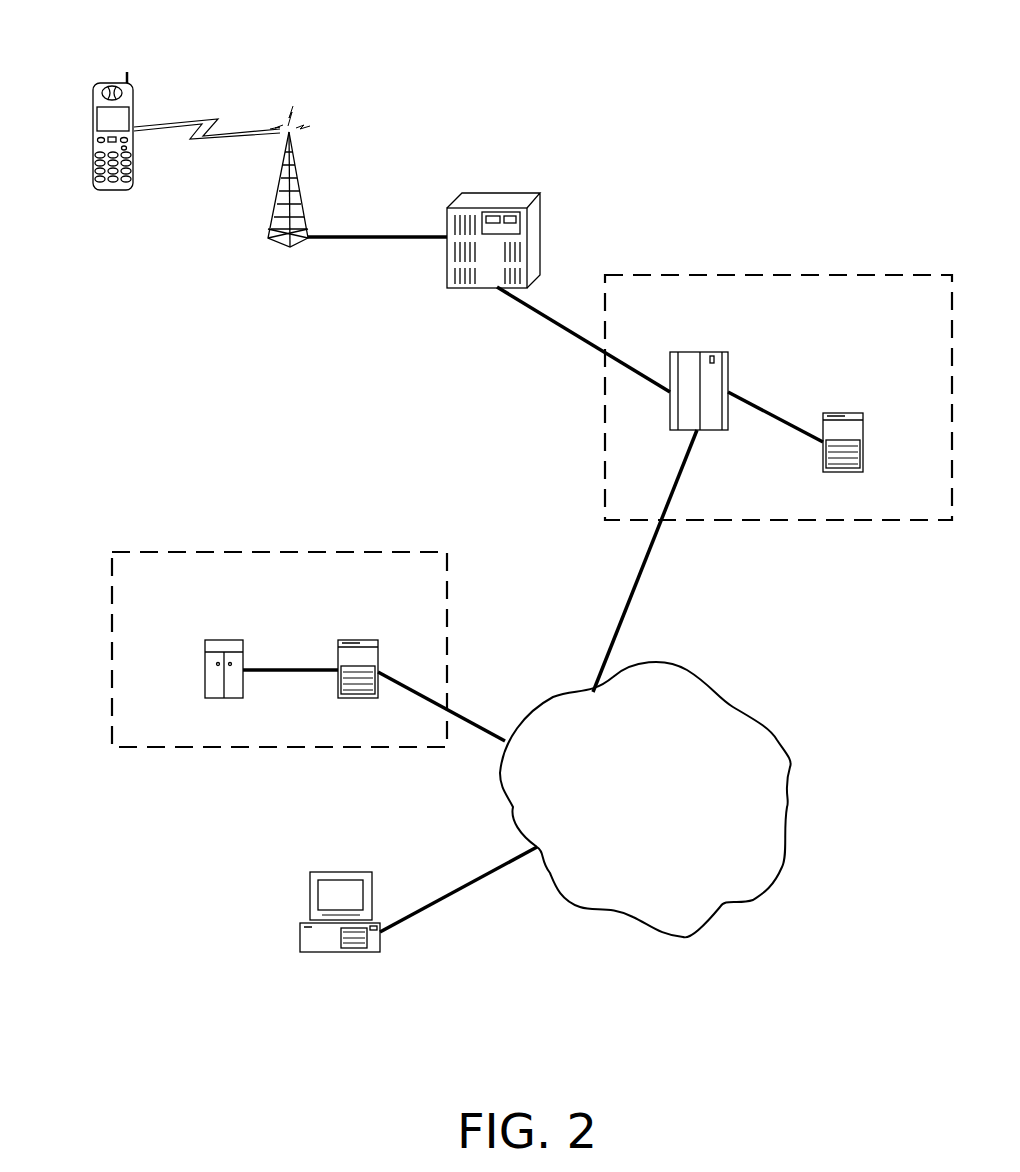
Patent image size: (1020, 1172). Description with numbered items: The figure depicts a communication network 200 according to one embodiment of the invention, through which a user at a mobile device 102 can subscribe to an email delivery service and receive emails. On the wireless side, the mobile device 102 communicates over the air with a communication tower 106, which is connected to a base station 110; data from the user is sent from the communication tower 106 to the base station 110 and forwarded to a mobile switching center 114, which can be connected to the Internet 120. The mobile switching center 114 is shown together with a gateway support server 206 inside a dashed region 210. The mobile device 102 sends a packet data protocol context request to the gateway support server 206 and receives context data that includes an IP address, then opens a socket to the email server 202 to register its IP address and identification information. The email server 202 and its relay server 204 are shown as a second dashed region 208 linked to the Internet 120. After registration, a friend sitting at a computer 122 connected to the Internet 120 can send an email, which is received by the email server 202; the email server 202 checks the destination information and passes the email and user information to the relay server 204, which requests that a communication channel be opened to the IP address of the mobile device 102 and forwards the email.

The mobile device 102 is at (133, 120).
The communication tower 106 is at (295, 163).
The base station 110 is at (541, 222).
The mobile switching center 114 is at (700, 352).
The Internet 120 is at (783, 745).
The computer 122 is at (310, 895).
The communication network 200 is at (625, 97).
The email server 202 is at (224, 640).
The relay server 204 is at (378, 652).
The gateway support server 206 is at (863, 422).
The email relay network (dashed region) 208 is at (210, 552).
The wireless carrier network (dashed region) 210 is at (765, 272).